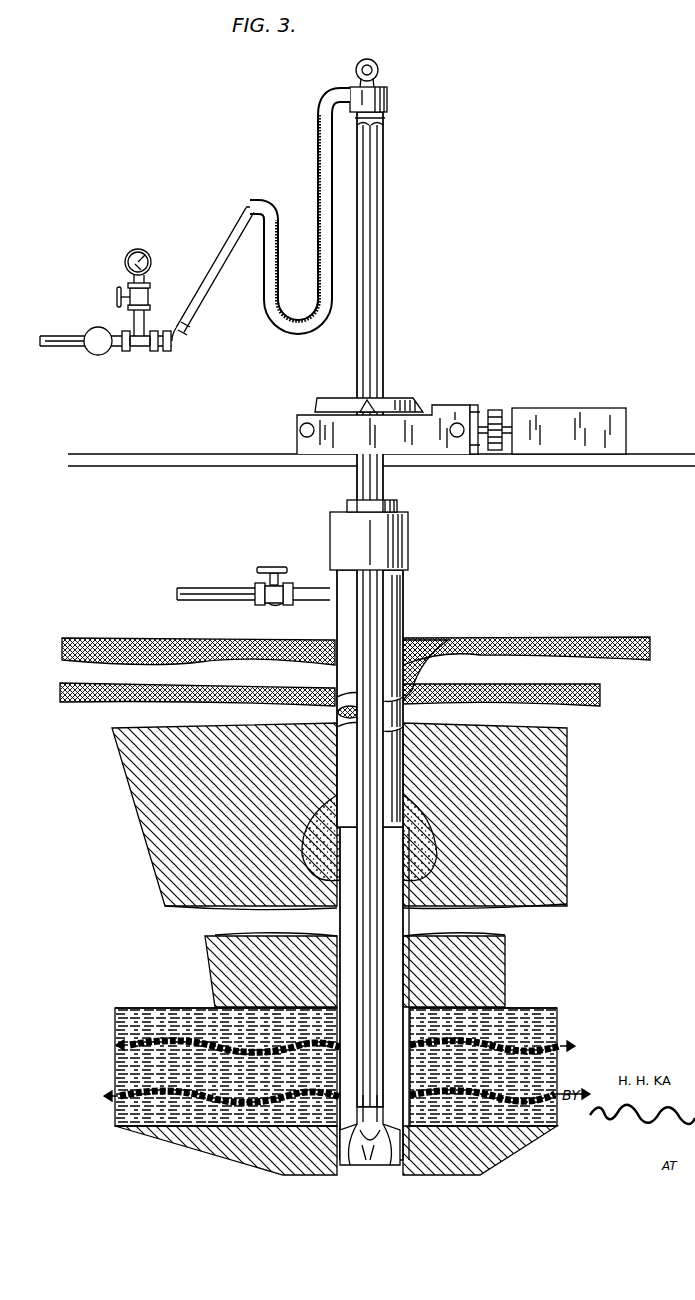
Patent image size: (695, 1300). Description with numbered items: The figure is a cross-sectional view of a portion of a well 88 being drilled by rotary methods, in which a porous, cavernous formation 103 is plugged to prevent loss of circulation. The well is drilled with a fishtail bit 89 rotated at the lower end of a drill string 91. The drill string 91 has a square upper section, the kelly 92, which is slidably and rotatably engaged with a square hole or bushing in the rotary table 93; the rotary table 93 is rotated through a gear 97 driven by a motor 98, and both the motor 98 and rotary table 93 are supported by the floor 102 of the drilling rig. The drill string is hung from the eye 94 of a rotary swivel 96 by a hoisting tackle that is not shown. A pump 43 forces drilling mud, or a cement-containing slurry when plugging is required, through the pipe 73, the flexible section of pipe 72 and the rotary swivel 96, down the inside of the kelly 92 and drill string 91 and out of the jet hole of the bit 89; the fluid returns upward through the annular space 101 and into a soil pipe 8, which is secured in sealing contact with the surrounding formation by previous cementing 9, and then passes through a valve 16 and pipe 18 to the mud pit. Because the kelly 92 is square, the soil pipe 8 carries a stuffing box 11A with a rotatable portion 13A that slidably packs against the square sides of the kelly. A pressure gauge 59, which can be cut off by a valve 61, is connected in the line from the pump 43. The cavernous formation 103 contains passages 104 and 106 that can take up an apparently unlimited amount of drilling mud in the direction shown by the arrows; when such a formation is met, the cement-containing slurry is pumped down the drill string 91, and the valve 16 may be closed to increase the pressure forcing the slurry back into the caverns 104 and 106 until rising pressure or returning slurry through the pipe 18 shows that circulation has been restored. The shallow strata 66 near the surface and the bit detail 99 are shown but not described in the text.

The soil pipe 8 is at (405, 626).
The cementing 9 is at (356, 858).
The stuffing box 11A is at (342, 542).
The rotatable portion 13A is at (350, 507).
The valve 16 is at (272, 585).
The pipe 18 is at (205, 580).
The pump 43 is at (93, 331).
The pressure gauge 59 is at (126, 266).
The valve 61 is at (118, 293).
The surface strata 66 is at (490, 640).
The flexible section of pipe 72 is at (314, 186).
The pipe 73 is at (218, 264).
The well 88 is at (400, 908).
The fishtail bit 89 is at (379, 1118).
The drill string 91 is at (360, 938).
The kelly 92 is at (385, 310).
The rotary table 93 is at (406, 400).
The eye 94 is at (378, 76).
The rotary swivel 96 is at (388, 107).
The gear 97 is at (487, 408).
The motor 98 is at (626, 432).
The drill bit 99 is at (395, 1142).
The annular space 101 is at (400, 938).
The floor 102 is at (578, 467).
The cavernous formation 103 is at (510, 1025).
The passage 104 is at (555, 1046).
The passage 106 is at (560, 1088).